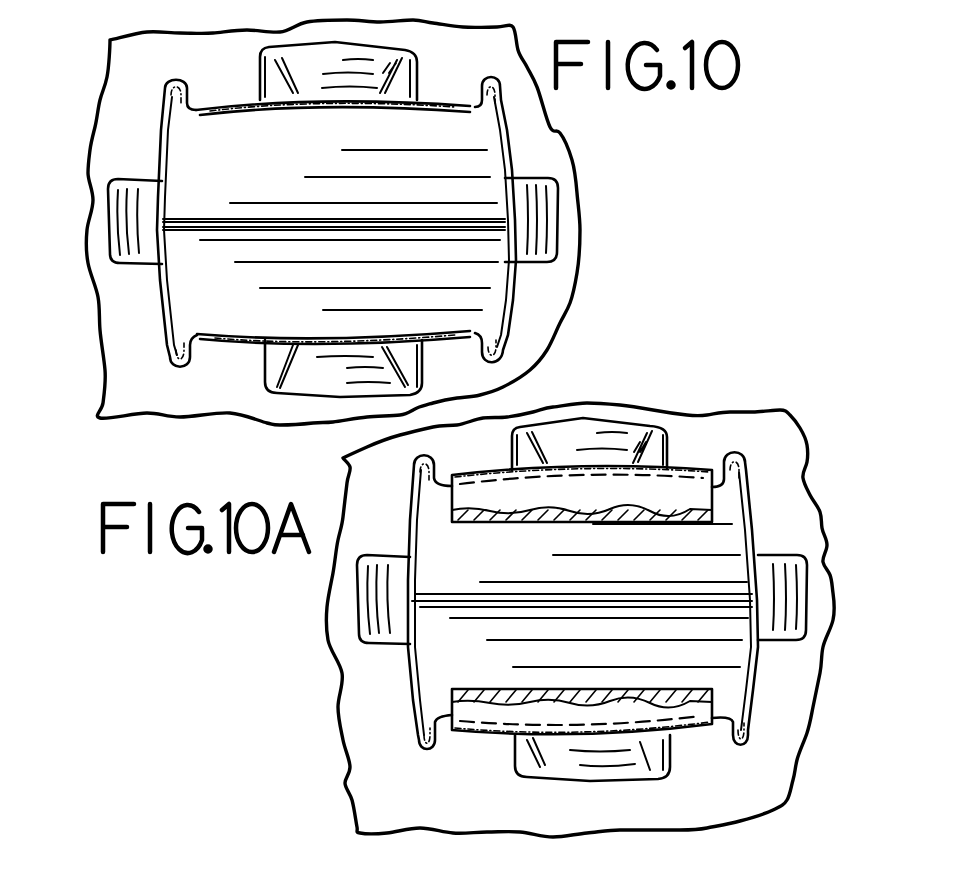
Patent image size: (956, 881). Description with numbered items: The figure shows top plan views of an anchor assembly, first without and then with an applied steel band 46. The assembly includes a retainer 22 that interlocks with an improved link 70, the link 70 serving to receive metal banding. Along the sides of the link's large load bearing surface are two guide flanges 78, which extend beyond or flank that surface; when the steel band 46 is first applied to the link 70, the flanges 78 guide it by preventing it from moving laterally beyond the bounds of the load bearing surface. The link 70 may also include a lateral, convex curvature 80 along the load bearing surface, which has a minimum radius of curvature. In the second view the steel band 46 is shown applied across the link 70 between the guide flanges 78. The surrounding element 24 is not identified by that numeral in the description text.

In FIG. 10, the retainer 22 is at (273, 392).
In FIG. 10A, the retainer 22 is at (555, 762).
In FIG. 10, the support panel 24 is at (147, 320).
In FIG. 10A, the support panel 24 is at (418, 808).
In FIG. 10A, the steel band 46 is at (703, 492).
In FIG. 10, the improved link 70 is at (550, 213).
In FIG. 10A, the improved link 70 is at (363, 602).
In FIG. 10, the guide flanges 78 is at (160, 97).
In FIG. 10A, the guide flanges 78 is at (420, 733).
In FIG. 10, the lateral convex curvature 80 is at (420, 107).
In FIG. 10A, the lateral convex curvature 80 is at (723, 492).